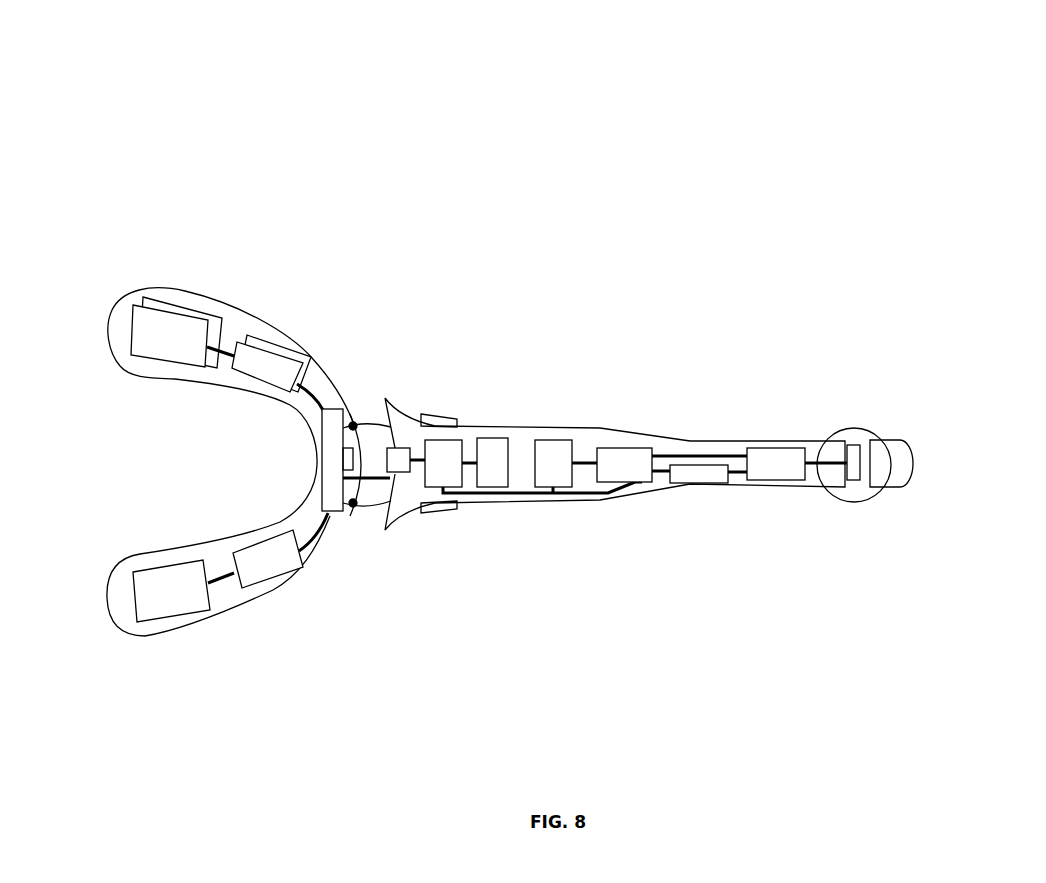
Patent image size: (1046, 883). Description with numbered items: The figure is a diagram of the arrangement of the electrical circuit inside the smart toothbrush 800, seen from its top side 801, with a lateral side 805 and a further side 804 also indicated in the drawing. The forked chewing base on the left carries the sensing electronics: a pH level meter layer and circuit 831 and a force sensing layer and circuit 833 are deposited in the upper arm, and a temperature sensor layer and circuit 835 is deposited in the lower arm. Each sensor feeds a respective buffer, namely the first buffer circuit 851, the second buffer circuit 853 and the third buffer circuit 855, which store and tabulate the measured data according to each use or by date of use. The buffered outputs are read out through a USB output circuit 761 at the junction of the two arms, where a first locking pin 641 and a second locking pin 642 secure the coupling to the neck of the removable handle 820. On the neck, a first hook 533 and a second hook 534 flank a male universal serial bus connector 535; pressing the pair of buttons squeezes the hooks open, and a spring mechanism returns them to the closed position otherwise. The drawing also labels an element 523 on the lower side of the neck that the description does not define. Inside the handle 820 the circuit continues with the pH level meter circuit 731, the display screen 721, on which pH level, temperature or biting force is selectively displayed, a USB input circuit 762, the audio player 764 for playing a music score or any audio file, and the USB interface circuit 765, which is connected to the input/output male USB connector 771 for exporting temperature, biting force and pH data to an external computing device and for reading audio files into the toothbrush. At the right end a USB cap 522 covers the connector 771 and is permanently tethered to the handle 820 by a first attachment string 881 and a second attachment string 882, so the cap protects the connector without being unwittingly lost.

The toothbrush 800 is at (592, 125).
The top side 801 is at (125, 340).
The temple arm 804 is at (110, 326).
The lateral side 805 is at (210, 383).
The force sensing layer and circuit 833 is at (163, 298).
The pH level meter layer and circuit 831 is at (169, 336).
The second buffer circuit 853 is at (262, 336).
The first buffer circuit 851 is at (267, 367).
The temperature sensor layer and circuit 835 is at (171, 591).
The third buffer circuit 855 is at (268, 559).
The USB output circuit 761 is at (337, 409).
The first locking pin 641 is at (354, 423).
The second locking pin 642 is at (353, 508).
The first hook 533 is at (372, 420).
The second hook 534 is at (384, 508).
The male universal serial bus connector 535 is at (405, 446).
The USB cap 522 is at (442, 418).
The contact pad 523 is at (437, 512).
The pH level meter circuit 731 is at (443, 463).
The display screen 721 is at (494, 437).
The USB input circuit 762 is at (554, 439).
The audio player 764 is at (698, 477).
The USB interface circuit 765 is at (767, 447).
The input/output male USB connector 771 is at (852, 444).
The removable handle 820 is at (682, 438).
The first attachment string 881 is at (857, 430).
The second attachment string 882 is at (845, 502).